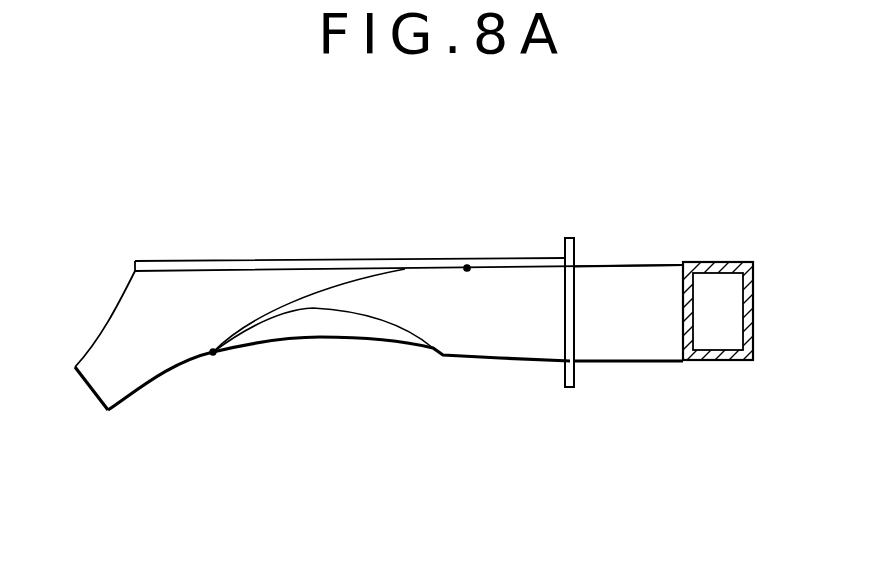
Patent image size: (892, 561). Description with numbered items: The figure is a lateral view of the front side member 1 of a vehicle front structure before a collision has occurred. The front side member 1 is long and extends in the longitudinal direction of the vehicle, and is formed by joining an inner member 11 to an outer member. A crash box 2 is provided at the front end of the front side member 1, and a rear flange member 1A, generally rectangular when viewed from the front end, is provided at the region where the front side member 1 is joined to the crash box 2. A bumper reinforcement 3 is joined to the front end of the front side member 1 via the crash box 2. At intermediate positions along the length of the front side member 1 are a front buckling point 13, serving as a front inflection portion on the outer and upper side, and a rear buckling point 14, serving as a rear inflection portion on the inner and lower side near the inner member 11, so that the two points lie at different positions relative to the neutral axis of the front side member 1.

The front side member 1 is at (379, 285).
The rear flange member 1A is at (575, 244).
The crash box 2 is at (623, 347).
The bumper reinforcement 3 is at (753, 310).
The inner member 11 is at (177, 278).
The front buckling point 13 is at (468, 266).
The rear buckling point 14 is at (213, 352).